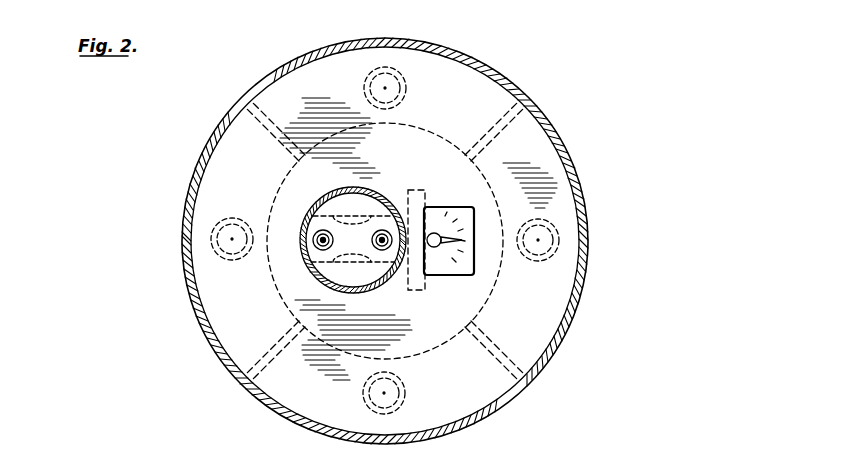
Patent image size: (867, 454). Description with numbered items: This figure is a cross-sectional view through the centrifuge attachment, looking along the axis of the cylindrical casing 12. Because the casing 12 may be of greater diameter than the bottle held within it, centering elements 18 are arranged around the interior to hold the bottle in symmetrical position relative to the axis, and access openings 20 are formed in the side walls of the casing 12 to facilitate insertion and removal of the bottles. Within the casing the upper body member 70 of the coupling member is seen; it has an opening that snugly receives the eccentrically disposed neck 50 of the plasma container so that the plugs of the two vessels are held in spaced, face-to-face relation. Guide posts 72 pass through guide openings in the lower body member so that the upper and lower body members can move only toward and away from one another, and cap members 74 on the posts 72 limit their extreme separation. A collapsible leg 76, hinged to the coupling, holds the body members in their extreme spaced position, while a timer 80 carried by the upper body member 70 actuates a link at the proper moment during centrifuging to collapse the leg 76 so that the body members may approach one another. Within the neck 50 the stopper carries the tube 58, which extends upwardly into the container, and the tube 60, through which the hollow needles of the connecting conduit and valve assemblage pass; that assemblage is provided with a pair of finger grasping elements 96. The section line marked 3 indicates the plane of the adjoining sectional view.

The housing 12 is at (589, 196).
The peripheral wall 20 is at (512, 89).
The surface of housing 70 is at (533, 152).
The ribs 18 is at (269, 122).
The mounting holes 72 is at (405, 103).
The mounting holes 74 is at (547, 263).
The ring 50 is at (315, 204).
The terminal 58 is at (320, 247).
The terminal 60 is at (386, 252).
The bosses 96 is at (362, 214).
The gauge 80 is at (438, 214).
The slot 76 is at (421, 292).
The section line 3 is at (289, 226).